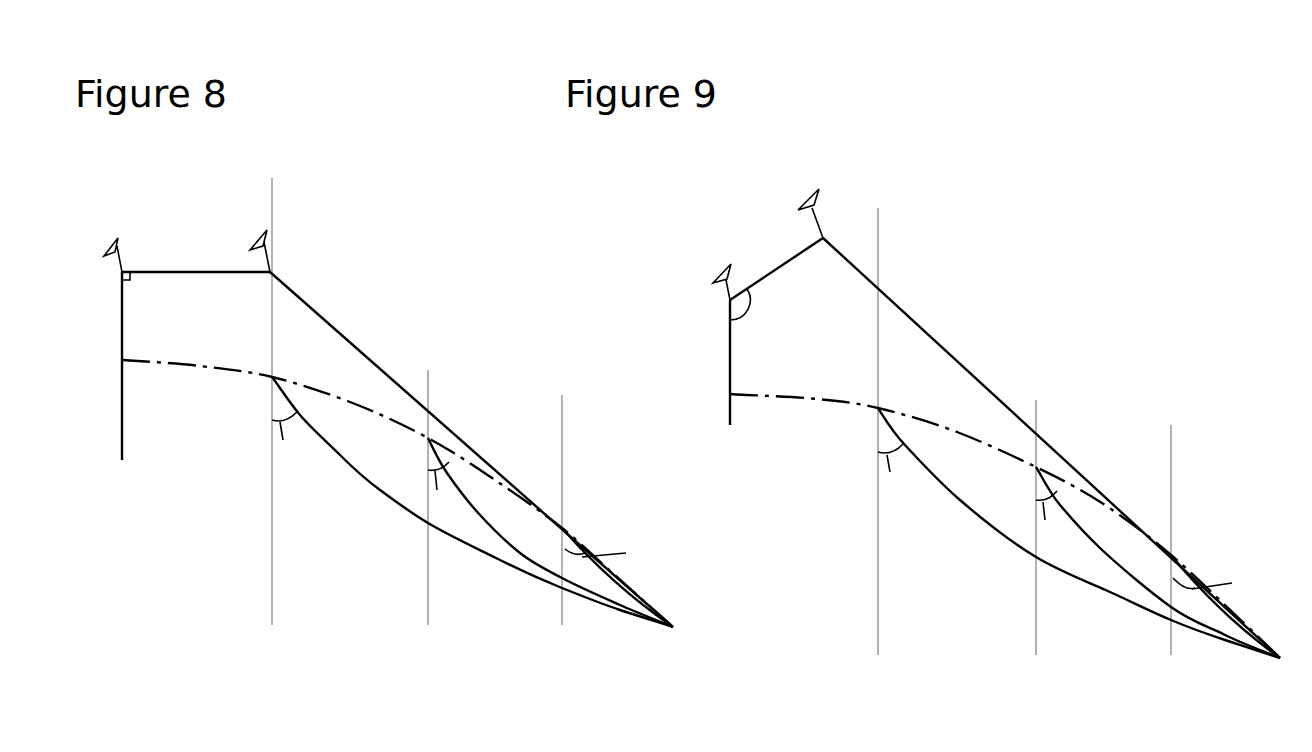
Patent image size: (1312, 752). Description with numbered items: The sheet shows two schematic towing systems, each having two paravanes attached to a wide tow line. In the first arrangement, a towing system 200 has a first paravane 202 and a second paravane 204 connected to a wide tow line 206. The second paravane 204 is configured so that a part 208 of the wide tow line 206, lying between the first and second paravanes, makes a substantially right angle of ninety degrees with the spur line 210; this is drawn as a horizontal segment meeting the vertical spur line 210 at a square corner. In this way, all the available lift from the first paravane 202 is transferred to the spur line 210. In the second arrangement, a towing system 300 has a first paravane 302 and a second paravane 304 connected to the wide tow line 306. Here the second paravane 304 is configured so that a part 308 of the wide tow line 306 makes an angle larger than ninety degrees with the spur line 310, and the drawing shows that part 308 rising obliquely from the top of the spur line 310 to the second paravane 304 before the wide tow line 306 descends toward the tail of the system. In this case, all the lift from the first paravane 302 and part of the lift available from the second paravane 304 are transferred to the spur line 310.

In FIG. 8, the towing system 200 is at (360, 214).
In FIG. 8, the first paravane 202 is at (118, 243).
In FIG. 8, the second paravane 204 is at (265, 236).
In FIG. 8, the wide tow line 206 is at (347, 336).
In FIG. 8, the part of the wide tow line 208 is at (176, 272).
In FIG. 8, the spur line 210 is at (122, 340).
In FIG. 9, the towing system 300 is at (998, 199).
In FIG. 9, the first paravane 302 is at (714, 270).
In FIG. 9, the second paravane 304 is at (812, 196).
In FIG. 9, the wide tow line 306 is at (937, 330).
In FIG. 9, the part of the wide tow line 308 is at (776, 267).
In FIG. 9, the spur line 310 is at (730, 356).